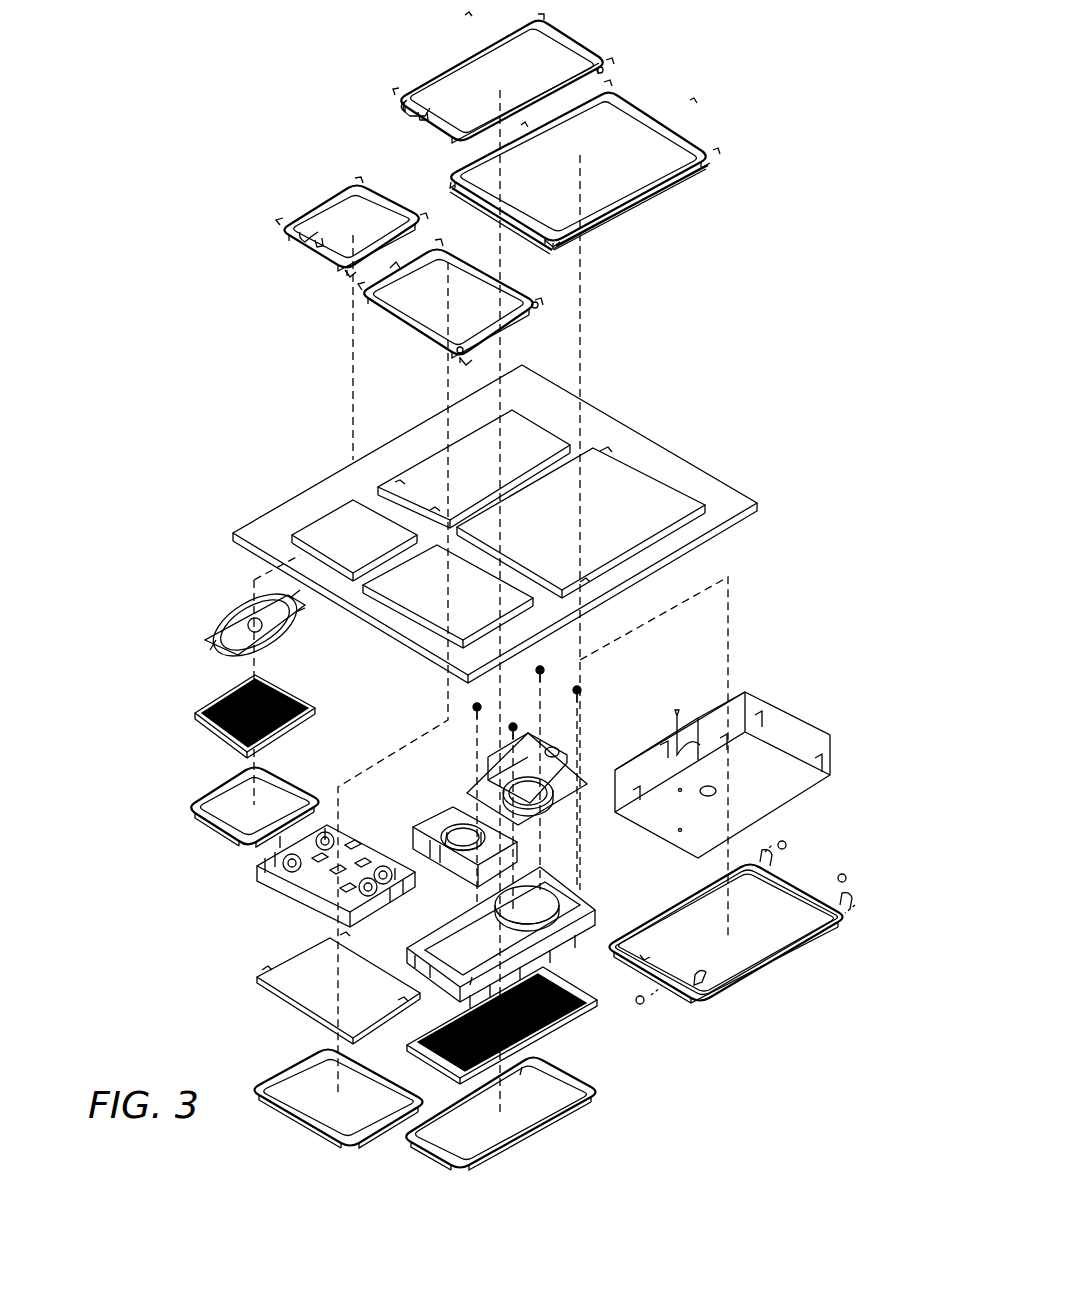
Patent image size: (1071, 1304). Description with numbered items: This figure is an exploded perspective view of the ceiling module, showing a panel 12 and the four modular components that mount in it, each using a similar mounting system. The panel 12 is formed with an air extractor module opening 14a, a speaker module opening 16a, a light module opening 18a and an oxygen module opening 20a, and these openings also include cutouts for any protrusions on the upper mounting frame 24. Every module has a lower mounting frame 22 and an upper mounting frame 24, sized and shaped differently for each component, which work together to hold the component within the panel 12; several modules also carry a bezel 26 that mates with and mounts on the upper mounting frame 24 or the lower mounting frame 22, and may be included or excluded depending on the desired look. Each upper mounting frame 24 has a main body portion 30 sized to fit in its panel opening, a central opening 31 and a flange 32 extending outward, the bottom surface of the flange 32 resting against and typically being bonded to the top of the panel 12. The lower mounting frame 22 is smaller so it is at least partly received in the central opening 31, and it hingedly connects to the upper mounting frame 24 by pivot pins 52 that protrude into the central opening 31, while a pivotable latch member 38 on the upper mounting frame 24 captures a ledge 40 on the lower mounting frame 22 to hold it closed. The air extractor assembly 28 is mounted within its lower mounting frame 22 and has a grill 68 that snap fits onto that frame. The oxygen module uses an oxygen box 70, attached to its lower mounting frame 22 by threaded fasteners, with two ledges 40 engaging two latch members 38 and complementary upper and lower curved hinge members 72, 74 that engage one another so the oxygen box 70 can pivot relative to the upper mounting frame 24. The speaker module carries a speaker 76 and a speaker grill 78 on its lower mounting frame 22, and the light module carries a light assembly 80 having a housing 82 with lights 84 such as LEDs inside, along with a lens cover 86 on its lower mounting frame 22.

The panel 12 is at (688, 477).
The air extractor module opening 14a is at (540, 433).
The speaker module opening 16a is at (307, 532).
The light module opening 18a is at (410, 588).
The oxygen module opening 20a is at (640, 527).
The lower mounting frame 22 is at (491, 864).
The upper mounting frame 24 is at (625, 42).
The bezel 26 is at (197, 818).
The air extractor assembly 28 is at (478, 797).
The main body portion 30 is at (508, 50).
The central opening 31 is at (562, 53).
The flange 32 is at (555, 30).
The latch member 38 is at (410, 105).
The ledge 40 is at (324, 975).
The pivot pins 52 is at (595, 70).
The grill 68 is at (563, 1017).
The oxygen box 70 is at (790, 725).
The upper curved hinge member 72 is at (700, 173).
The lower curved hinge member 74 is at (837, 927).
The speaker 76 is at (220, 625).
The speaker grill 78 is at (293, 722).
The light assembly 80 is at (400, 840).
The housing 82 is at (262, 862).
The lights 84 is at (307, 875).
The lens cover 86 is at (285, 982).